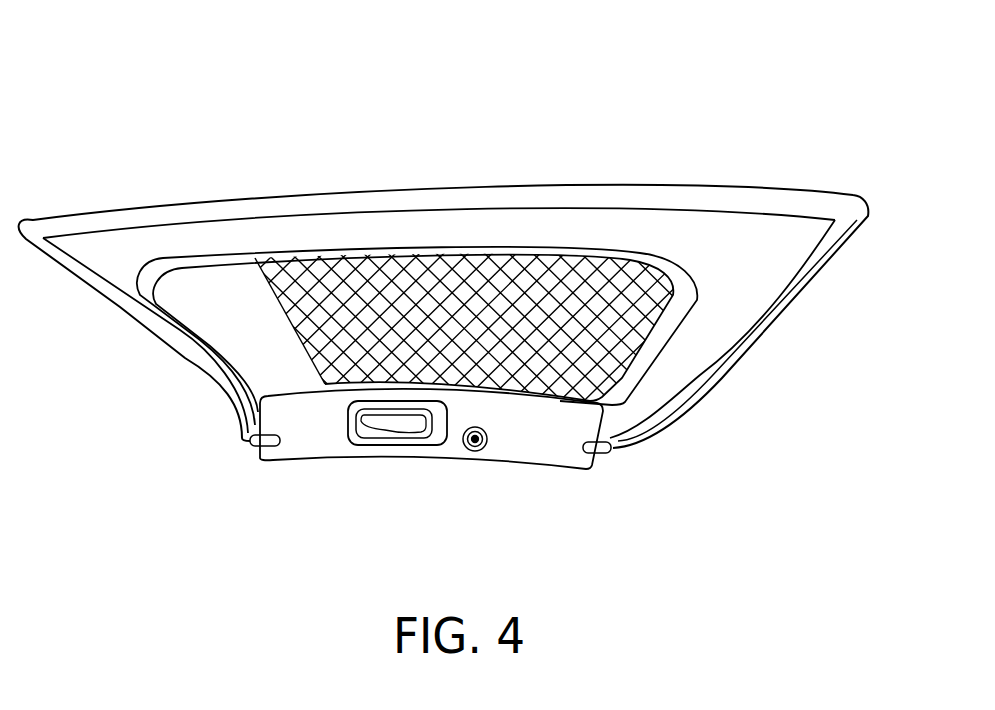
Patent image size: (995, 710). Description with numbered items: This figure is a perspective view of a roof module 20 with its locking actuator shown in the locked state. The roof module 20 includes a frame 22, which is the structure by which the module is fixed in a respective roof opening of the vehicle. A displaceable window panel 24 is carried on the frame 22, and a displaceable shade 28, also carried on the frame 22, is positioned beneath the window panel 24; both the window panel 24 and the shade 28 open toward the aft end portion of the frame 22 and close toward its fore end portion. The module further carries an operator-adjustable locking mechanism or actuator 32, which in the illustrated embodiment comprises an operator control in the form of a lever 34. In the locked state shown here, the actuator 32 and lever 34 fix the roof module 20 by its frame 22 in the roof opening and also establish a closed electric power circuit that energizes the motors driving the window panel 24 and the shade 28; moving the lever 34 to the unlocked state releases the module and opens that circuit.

The roof module 20 is at (673, 143).
The frame 22 is at (443, 230).
The window panel 24 is at (220, 312).
The shade 28 is at (295, 325).
The operator-adjustable locking mechanism or actuator 32 is at (338, 446).
The lever 34 is at (385, 430).